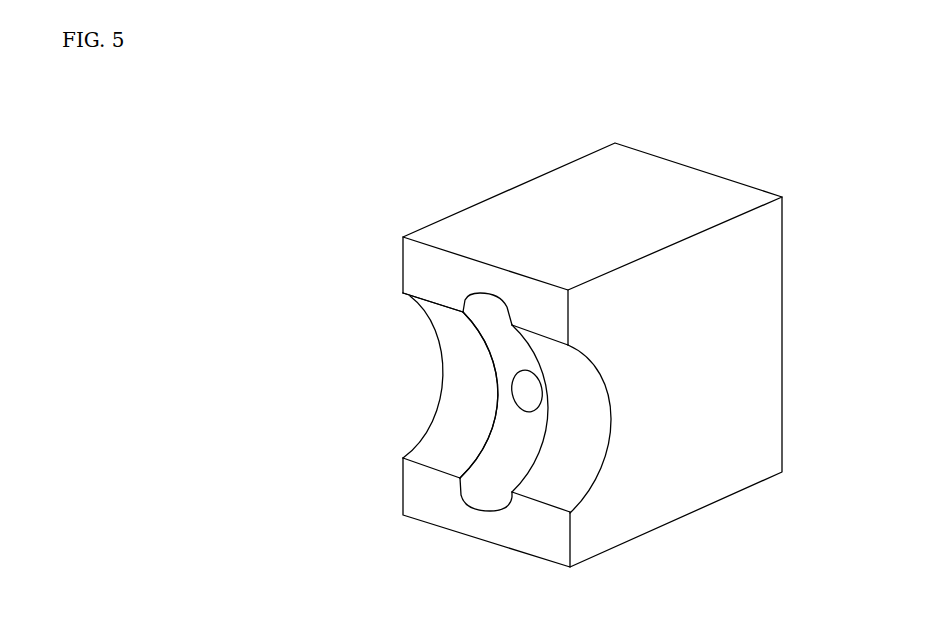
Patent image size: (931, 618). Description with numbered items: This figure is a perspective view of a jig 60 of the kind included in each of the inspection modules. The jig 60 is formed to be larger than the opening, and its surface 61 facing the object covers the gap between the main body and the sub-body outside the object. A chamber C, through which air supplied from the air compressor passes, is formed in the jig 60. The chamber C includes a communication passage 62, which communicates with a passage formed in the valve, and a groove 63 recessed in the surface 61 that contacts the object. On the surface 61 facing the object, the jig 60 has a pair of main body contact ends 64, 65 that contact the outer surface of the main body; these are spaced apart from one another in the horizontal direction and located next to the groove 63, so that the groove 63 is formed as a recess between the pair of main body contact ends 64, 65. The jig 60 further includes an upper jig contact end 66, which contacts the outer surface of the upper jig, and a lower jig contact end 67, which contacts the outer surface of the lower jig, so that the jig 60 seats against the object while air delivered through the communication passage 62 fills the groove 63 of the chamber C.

The jig 60 is at (705, 460).
The surface 61 is at (540, 322).
The communication passage 62 is at (527, 392).
The groove 63 is at (495, 462).
The main body contact end 64 is at (458, 360).
The main body contact end 65 is at (572, 462).
The upper jig contact end 66 is at (453, 263).
The lower jig contact end 67 is at (540, 528).
The chamber C is at (392, 387).